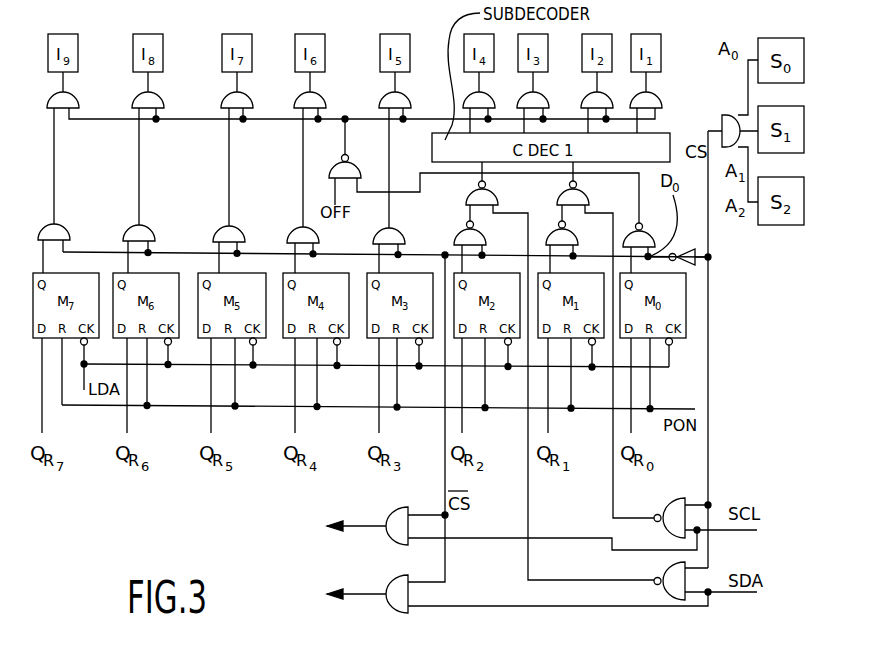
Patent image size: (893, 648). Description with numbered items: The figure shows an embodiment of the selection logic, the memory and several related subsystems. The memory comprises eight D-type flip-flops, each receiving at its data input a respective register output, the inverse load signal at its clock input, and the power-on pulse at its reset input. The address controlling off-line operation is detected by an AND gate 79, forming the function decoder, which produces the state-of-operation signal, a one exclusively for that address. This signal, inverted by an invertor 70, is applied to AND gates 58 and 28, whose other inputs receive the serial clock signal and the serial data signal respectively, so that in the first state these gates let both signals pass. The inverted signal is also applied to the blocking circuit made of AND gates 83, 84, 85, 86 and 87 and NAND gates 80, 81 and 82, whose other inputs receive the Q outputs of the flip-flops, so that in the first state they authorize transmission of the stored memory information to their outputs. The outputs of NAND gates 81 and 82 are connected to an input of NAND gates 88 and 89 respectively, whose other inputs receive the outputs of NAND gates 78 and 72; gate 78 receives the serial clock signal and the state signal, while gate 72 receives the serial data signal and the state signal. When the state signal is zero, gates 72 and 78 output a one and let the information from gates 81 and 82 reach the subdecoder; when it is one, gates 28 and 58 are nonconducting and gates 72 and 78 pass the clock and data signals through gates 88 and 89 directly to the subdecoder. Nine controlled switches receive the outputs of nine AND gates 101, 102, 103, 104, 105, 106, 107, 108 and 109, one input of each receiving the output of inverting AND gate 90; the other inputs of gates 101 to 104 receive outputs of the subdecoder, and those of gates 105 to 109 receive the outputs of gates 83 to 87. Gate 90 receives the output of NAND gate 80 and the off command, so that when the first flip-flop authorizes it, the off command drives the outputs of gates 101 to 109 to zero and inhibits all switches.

The AND gate 101 is at (659, 80).
The AND gate 102 is at (609, 80).
The AND gate 103 is at (547, 80).
The AND gate 104 is at (491, 80).
The AND gate 105 is at (396, 98).
The AND gate 106 is at (311, 98).
The AND gate 107 is at (238, 98).
The AND gate 108 is at (150, 98).
The AND gate 109 is at (65, 98).
The inverting AND gate 90 is at (350, 166).
The NAND gate 89 is at (496, 204).
The NAND gate 88 is at (587, 204).
The AND gate 87 is at (56, 230).
The AND gate 86 is at (141, 231).
The AND gate 85 is at (225, 228).
The AND gate 84 is at (298, 229).
The AND gate 83 is at (391, 231).
The NAND gate 82 is at (462, 232).
The NAND gate 81 is at (578, 243).
The NAND gate 80 is at (643, 235).
The AND gate 79 is at (729, 112).
The invertor 70 is at (683, 248).
The NAND gate 78 is at (667, 512).
The NAND gate 72 is at (662, 577).
The AND gate 58 is at (388, 528).
The AND gate 28 is at (389, 583).